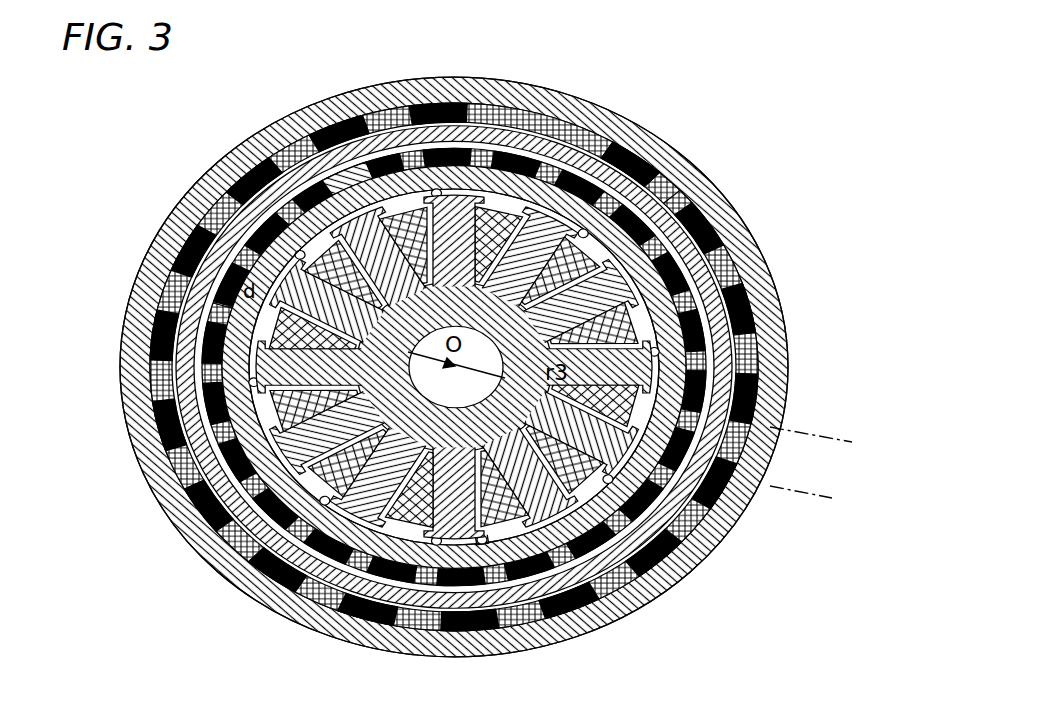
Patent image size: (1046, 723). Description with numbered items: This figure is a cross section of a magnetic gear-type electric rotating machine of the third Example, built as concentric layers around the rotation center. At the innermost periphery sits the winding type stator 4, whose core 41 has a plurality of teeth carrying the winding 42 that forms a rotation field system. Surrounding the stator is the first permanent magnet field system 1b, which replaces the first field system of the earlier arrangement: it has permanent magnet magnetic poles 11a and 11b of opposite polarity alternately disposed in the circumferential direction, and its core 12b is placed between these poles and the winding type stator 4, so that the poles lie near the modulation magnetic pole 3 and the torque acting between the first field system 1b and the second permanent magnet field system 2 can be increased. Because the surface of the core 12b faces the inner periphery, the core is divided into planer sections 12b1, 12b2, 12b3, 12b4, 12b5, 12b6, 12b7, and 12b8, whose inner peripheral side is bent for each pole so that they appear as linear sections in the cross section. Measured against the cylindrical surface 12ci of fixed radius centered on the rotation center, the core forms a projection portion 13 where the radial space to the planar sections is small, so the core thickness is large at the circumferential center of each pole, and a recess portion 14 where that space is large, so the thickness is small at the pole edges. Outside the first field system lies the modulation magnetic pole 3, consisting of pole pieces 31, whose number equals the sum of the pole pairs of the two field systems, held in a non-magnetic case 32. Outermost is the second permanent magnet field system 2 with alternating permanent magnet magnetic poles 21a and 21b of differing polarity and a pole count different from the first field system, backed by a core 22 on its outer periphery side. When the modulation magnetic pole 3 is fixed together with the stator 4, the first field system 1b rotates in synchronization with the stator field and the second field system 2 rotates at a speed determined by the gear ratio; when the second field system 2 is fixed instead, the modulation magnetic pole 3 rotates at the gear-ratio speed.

The first permanent magnet field system 1b is at (262, 232).
The second permanent magnet field system 2 is at (502, 82).
The modulation magnetic pole 3 is at (738, 390).
The winding type stator 4 is at (458, 560).
The permanent magnet magnetic pole 11a is at (332, 186).
The permanent magnet magnetic pole 11b is at (222, 292).
The core 12b is at (222, 306).
The planer section 12b1 is at (505, 552).
The planer section 12b2 is at (612, 484).
The planer section 12b3 is at (672, 352).
The planer section 12b4 is at (602, 216).
The planer section 12b5 is at (432, 186).
The planer section 12b6 is at (230, 362).
The planer section 12b7 is at (312, 492).
The planer section 12b8 is at (438, 553).
The cylindrical surface 12ci is at (484, 550).
The projection portion 13 is at (366, 182).
The recess portion 14 is at (441, 190).
The permanent magnet magnetic pole 21a is at (652, 182).
The permanent magnet magnetic pole 21b is at (702, 222).
The core 22 is at (622, 84).
The pole piece 31 is at (722, 482).
The non-magnetic case 32 is at (692, 497).
The core 41 is at (362, 502).
The winding 42 is at (416, 522).